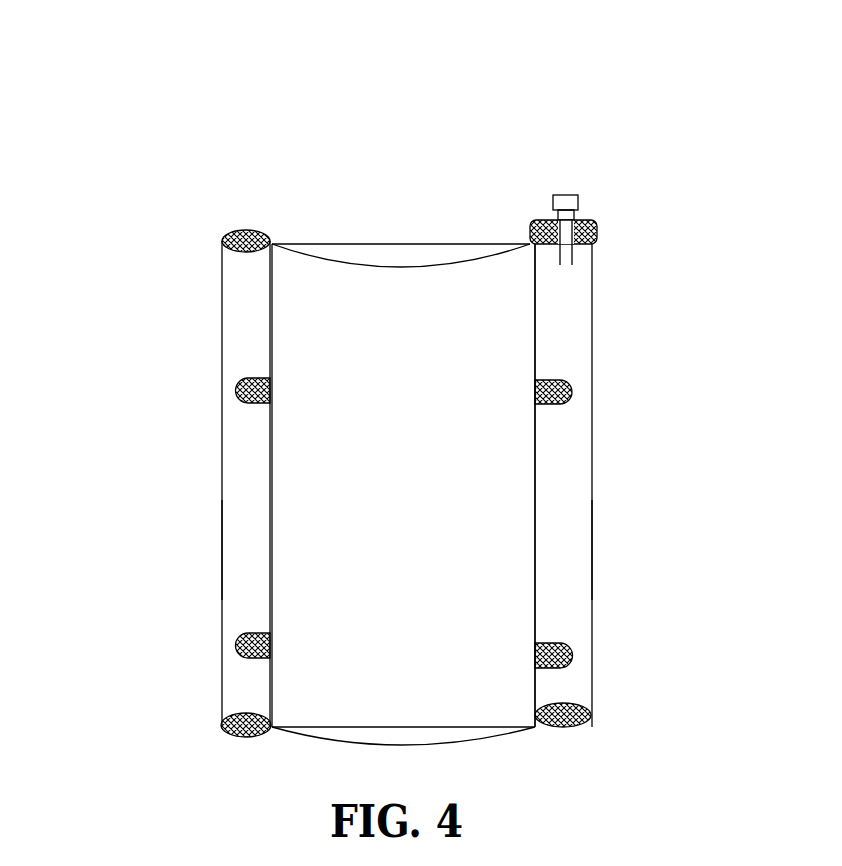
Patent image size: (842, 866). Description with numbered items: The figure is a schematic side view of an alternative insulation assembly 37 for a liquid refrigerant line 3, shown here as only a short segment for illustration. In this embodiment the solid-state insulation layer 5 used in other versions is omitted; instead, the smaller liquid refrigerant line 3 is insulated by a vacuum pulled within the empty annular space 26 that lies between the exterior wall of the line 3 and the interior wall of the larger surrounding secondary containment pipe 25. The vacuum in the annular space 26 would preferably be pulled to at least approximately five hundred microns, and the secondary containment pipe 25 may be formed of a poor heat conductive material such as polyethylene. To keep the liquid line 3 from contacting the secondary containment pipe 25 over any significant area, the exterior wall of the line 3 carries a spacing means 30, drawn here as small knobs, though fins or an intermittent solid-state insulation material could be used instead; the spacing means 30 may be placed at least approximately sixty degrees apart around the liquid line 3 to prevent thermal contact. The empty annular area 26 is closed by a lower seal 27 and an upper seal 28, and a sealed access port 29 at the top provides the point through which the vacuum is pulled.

The alternative insulation assembly 37 is at (215, 168).
The liquid refrigerant line 3 is at (270, 468).
The solid-state insulation layer 5 is at (228, 283).
The secondary containment pipe 25 is at (222, 553).
The empty annular space 26 is at (250, 345).
The lower seal 27 is at (222, 733).
The upper seal 28 is at (245, 232).
The sealed access port 29 is at (580, 197).
The spacing means 30 is at (240, 388).